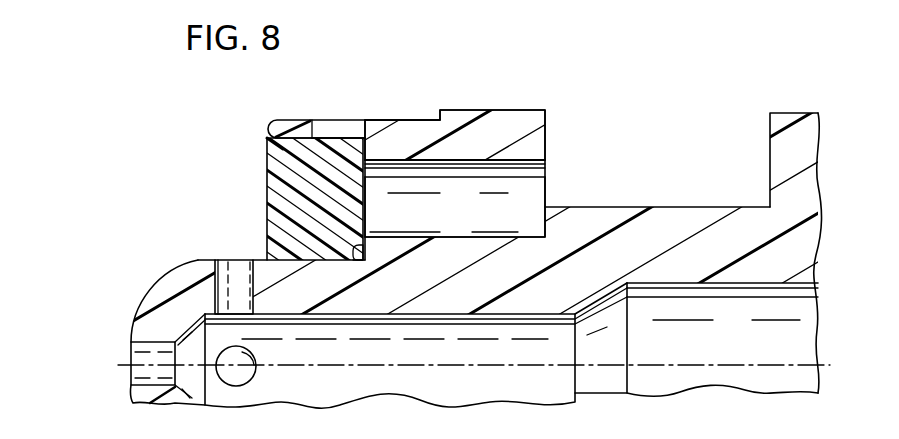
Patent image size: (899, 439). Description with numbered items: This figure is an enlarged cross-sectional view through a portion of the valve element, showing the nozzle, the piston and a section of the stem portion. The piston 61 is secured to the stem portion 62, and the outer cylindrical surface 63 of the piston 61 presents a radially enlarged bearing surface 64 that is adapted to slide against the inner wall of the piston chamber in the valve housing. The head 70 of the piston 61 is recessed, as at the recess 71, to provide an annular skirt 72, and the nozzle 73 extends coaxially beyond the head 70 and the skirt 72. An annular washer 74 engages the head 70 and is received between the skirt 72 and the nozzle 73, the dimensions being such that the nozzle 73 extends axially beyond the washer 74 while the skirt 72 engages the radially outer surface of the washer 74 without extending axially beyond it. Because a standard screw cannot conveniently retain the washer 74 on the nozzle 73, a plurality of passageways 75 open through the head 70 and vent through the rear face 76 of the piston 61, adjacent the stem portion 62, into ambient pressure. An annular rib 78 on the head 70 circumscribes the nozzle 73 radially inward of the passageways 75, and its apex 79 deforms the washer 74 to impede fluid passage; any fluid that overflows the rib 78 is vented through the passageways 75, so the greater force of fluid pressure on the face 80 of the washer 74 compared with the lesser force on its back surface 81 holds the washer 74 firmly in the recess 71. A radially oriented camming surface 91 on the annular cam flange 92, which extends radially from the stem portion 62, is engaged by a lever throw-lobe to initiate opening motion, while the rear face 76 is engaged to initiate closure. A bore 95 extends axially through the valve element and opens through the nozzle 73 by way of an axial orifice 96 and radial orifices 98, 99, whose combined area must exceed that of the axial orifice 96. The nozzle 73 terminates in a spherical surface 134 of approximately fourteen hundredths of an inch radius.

The piston 61 is at (466, 88).
The stem portion 62 is at (648, 207).
The outer cylindrical surface 63 is at (367, 118).
The bearing surface 64 is at (480, 108).
The head 70 is at (268, 125).
The recess 71 is at (262, 134).
The annular skirt 72 is at (313, 122).
The nozzle 73 is at (203, 258).
The annular washer 74 is at (333, 154).
The passageways 75 is at (548, 186).
The rear face 76 is at (548, 125).
The annular rib 78 is at (366, 247).
The apex 79 is at (347, 257).
The face 80 is at (266, 178).
The back surface 81 is at (392, 153).
The camming surface 91 is at (770, 153).
The annular cam flange 92 is at (818, 113).
The bore 95 is at (725, 285).
The axial orifice 96 is at (132, 355).
The radial orifice 98 is at (255, 355).
The radial orifice 99 is at (227, 258).
The spherical surface 134 is at (150, 297).